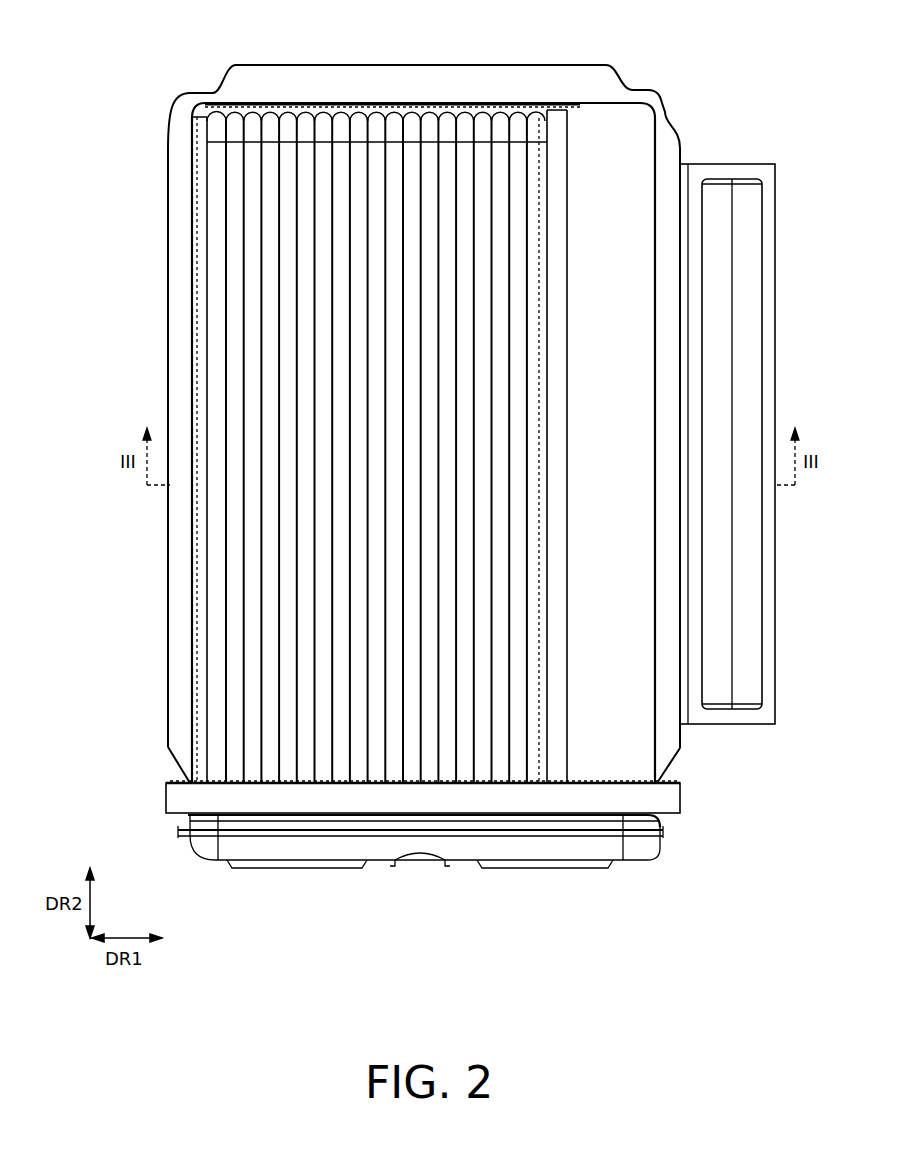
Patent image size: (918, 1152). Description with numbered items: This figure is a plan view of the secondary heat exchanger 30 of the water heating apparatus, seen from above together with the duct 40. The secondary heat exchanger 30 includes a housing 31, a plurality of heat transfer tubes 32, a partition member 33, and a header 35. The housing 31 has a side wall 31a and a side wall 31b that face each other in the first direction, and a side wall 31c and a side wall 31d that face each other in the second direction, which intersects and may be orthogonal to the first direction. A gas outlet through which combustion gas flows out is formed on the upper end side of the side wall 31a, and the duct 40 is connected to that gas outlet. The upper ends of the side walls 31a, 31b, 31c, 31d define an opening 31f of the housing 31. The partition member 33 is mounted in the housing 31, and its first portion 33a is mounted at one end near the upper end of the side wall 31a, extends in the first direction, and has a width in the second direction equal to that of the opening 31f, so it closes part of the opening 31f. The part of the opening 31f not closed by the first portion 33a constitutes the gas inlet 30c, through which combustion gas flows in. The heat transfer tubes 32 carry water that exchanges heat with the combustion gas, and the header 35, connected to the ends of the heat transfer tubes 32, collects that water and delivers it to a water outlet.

The secondary heat exchanger 30 is at (117, 47).
The gas inlet 30c is at (196, 182).
The housing 31 is at (153, 538).
The side wall 31a is at (657, 612).
The side wall 31b is at (193, 608).
The side wall 31c is at (372, 787).
The side wall 31d is at (405, 100).
The opening 31f is at (207, 270).
The heat transfer tube 32 is at (320, 124).
The partition member 33 is at (597, 170).
The first portion 33a is at (557, 446).
The header 35 is at (527, 847).
The duct 40 is at (713, 172).